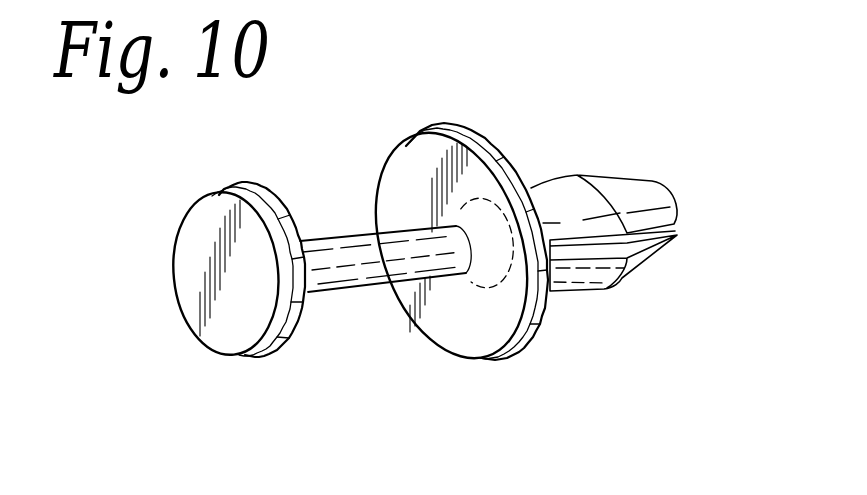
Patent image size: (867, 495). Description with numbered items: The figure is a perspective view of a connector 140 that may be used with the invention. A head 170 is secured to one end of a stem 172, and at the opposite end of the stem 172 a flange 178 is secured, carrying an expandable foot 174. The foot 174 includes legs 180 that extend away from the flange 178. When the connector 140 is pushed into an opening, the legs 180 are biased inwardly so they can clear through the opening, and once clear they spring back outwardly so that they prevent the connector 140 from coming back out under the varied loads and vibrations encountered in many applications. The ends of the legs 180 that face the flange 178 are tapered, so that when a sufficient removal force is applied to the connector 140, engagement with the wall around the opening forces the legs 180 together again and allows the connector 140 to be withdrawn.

The connector 140 is at (380, 333).
The head 170 is at (190, 239).
The stem 172 is at (338, 237).
The expandable foot 174 is at (595, 166).
The flange 178 is at (460, 128).
The legs 180 is at (673, 240).